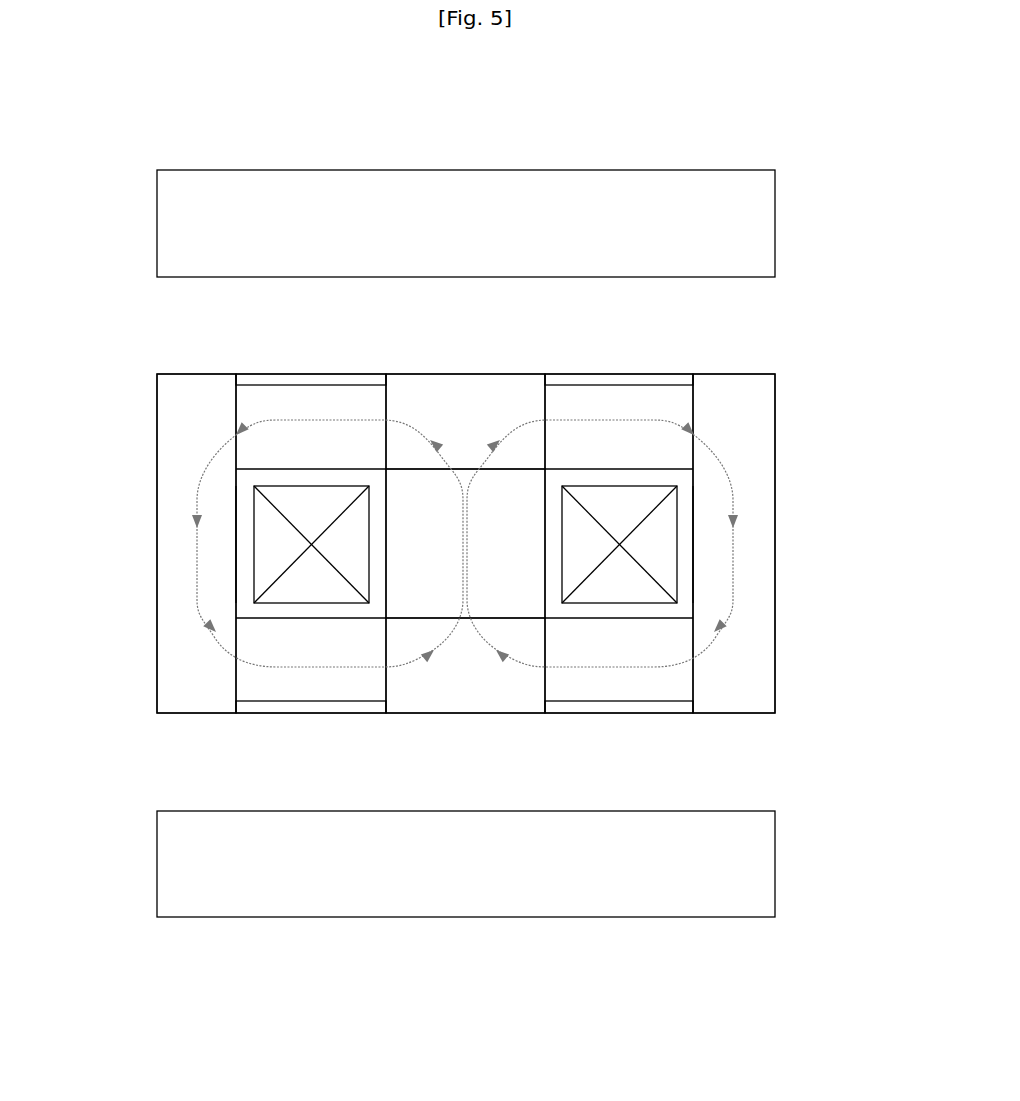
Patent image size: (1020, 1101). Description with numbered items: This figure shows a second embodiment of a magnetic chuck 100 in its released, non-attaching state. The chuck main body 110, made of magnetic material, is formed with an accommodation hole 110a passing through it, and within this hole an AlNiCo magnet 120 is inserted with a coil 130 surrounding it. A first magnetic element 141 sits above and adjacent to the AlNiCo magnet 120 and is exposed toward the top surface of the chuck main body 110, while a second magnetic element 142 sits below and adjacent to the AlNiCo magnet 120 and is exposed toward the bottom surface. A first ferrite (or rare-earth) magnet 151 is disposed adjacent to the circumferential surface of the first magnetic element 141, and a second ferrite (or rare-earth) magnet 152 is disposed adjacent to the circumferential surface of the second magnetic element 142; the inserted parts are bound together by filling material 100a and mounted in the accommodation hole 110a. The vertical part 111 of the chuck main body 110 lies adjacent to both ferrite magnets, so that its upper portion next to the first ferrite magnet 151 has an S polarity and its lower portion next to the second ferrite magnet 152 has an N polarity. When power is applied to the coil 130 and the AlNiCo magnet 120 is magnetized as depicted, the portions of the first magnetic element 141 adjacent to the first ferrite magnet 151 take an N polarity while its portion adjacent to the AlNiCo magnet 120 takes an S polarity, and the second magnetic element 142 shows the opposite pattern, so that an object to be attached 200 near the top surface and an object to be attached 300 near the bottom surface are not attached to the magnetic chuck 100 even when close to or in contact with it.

The magnetic chuck 100 is at (792, 657).
The filling material 100a is at (243, 497).
The chuck main body 110 is at (155, 655).
The accommodation hole 110a is at (693, 527).
The vertical part 111 is at (173, 417).
The AlNiCo magnet 120 is at (545, 562).
The coil 130 is at (253, 562).
The first magnetic element 141 is at (433, 373).
The second magnetic element 142 is at (465, 715).
The first ferrite (or rare-earth) magnet 151 is at (283, 383).
The second ferrite (or rare-earth) magnet 152 is at (307, 705).
The object to be attached 200 is at (467, 170).
The object to be attached 300 is at (463, 918).